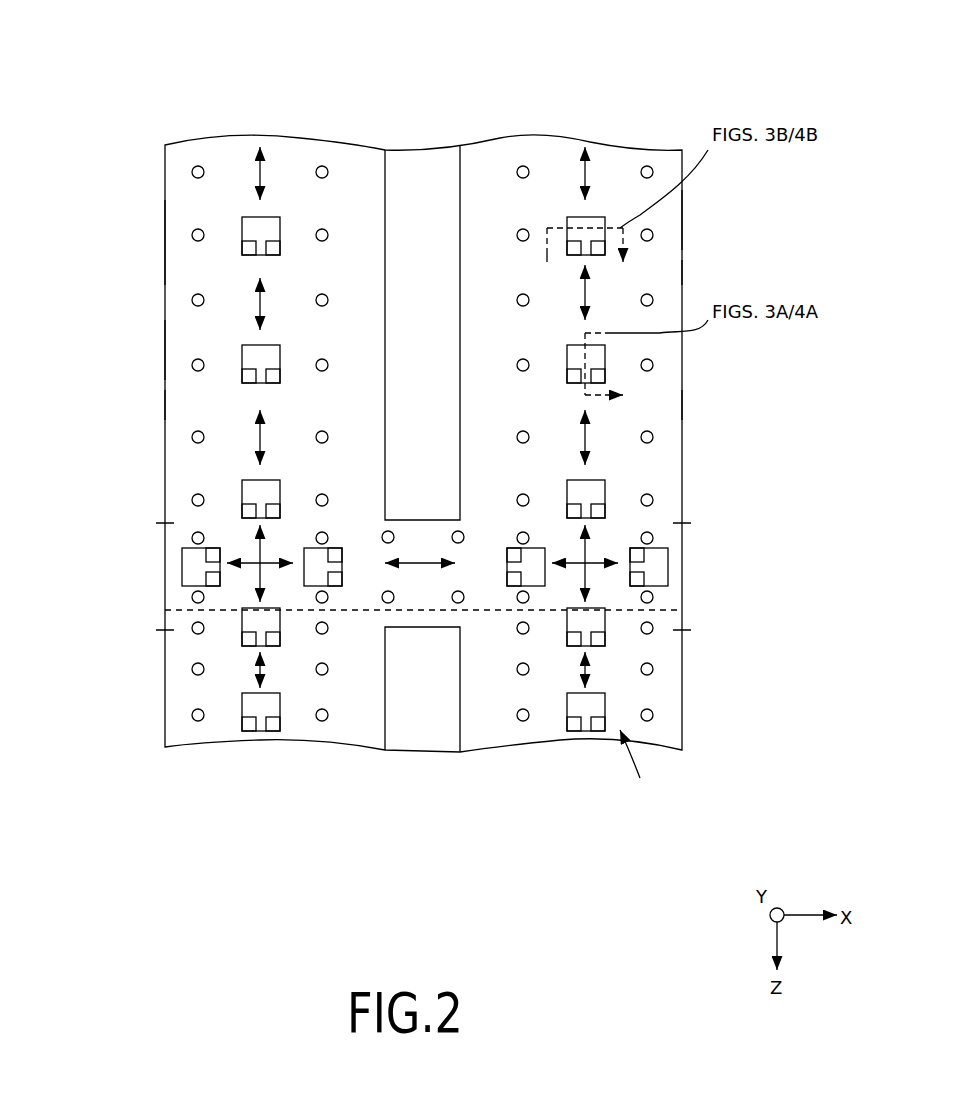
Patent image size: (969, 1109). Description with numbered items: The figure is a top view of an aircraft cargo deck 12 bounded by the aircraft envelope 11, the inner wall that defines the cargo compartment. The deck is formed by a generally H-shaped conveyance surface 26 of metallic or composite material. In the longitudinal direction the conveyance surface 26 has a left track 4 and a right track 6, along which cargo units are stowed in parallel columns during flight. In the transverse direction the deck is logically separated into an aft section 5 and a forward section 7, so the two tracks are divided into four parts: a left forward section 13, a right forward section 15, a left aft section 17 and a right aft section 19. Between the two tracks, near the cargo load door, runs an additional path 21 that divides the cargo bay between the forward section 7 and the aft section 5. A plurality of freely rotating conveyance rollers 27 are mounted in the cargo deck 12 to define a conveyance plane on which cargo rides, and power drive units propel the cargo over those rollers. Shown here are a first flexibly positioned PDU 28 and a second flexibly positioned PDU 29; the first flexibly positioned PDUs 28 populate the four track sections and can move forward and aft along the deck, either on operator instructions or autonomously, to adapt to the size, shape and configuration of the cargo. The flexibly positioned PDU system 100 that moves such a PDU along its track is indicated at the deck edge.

The cargo deck 12 is at (101, 82).
The left forward section 13 is at (280, 152).
The right forward section 15 is at (614, 160).
The conveyance surface 26 is at (436, 150).
The left aft section 17 is at (352, 730).
The right aft section 19 is at (638, 768).
The conveyance rollers 27 is at (328, 235).
The first flexibly positioned PDU 28 is at (283, 492).
The second flexibly positioned PDU 29 is at (181, 556).
The additional path 21 is at (154, 571).
The left track 4 is at (165, 232).
The aircraft envelope 11 is at (165, 352).
The right track 6 is at (668, 220).
The forward section 7 is at (120, 272).
The flexibly positioned PDU system 100 is at (178, 403).
The aft section 5 is at (130, 692).